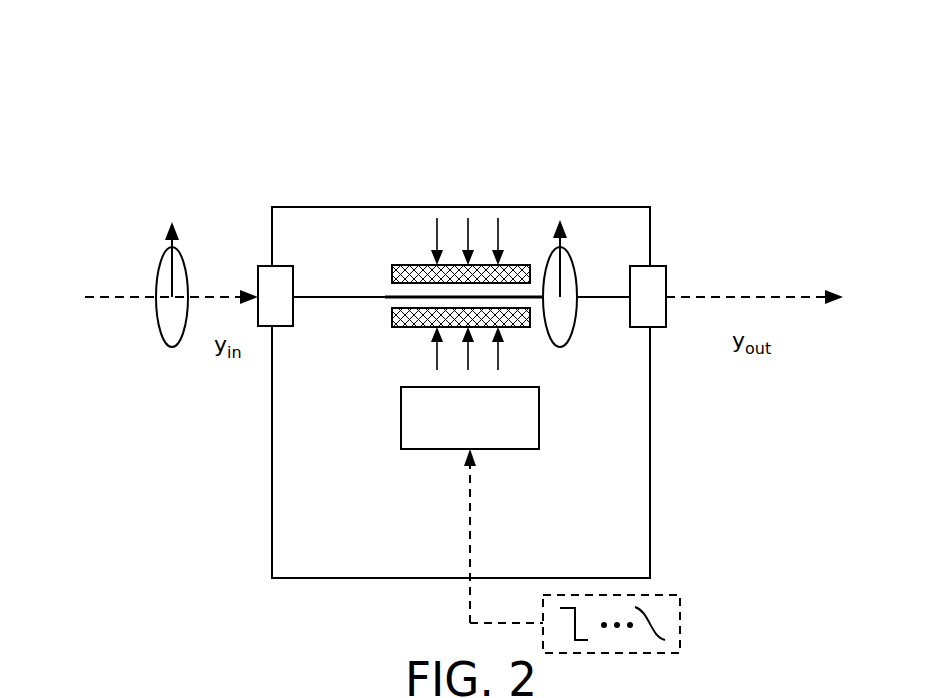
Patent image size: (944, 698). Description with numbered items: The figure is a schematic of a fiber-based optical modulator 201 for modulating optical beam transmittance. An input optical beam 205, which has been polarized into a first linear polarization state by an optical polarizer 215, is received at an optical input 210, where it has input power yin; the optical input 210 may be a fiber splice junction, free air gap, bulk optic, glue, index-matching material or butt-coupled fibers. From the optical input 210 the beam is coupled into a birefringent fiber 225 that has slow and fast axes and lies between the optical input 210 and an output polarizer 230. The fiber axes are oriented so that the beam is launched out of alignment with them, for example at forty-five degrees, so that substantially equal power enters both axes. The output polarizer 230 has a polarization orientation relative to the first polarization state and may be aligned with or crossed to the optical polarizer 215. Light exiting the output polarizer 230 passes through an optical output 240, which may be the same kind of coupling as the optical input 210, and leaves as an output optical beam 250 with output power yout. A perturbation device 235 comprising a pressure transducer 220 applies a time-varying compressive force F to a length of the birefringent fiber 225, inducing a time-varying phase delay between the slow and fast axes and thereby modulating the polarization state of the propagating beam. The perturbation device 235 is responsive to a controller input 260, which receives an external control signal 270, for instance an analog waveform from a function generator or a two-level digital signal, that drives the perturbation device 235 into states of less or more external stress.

The optical modulator 201 is at (246, 81).
The input optical beam 205 is at (145, 297).
The optical input 210 is at (258, 267).
The optical polarizer 215 is at (160, 262).
The pressure transducer 220 is at (420, 268).
The birefringent fiber 225 is at (398, 296).
The output polarizer 230 is at (570, 258).
The perturbation device 235 is at (470, 418).
The optical output 240 is at (662, 267).
The output optical beam 250 is at (760, 297).
The controller input 260 is at (495, 536).
The external control signal 270 is at (683, 602).